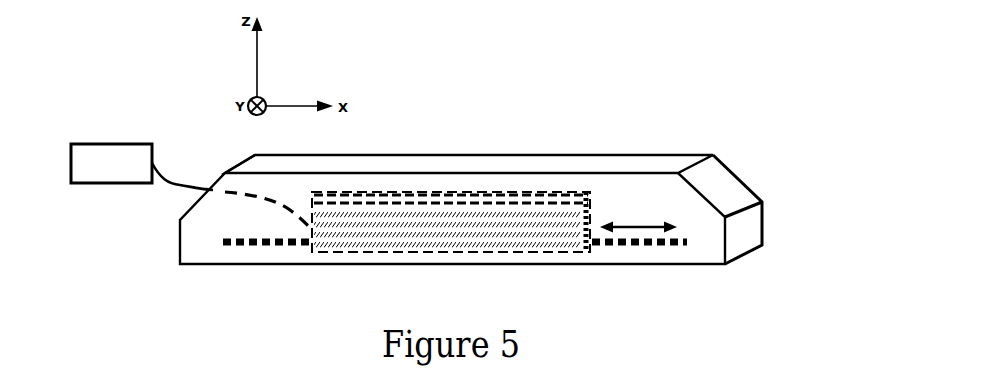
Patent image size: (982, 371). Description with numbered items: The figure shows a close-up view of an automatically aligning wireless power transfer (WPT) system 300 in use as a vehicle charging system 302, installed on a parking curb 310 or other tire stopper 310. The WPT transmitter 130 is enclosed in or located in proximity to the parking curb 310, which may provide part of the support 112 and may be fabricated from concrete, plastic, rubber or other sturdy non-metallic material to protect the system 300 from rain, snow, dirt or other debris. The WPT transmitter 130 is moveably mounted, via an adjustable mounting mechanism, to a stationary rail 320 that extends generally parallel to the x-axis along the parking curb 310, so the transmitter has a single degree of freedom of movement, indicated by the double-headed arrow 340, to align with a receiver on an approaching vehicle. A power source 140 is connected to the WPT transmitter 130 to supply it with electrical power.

The support 112 is at (208, 253).
The WPT transmitter 130 is at (451, 222).
The power source 140 is at (140, 143).
The automatically aligning wireless power transfer (WPT) system 300 is at (594, 67).
The vehicle charging system 302 is at (542, 110).
The parking curb 310 is at (233, 232).
The stationary rail 320 is at (680, 250).
The direction of movement 340 is at (620, 220).